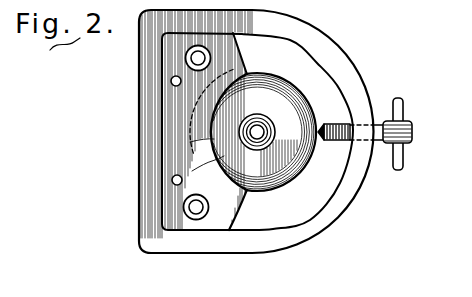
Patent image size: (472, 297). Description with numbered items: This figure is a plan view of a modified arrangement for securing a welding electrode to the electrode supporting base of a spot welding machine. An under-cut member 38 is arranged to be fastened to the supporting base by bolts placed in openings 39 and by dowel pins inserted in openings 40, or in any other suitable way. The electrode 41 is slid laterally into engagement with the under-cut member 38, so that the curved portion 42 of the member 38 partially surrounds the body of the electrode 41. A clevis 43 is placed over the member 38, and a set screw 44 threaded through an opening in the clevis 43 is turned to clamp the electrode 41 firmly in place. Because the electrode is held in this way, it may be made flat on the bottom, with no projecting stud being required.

The under-cut member 38 is at (214, 222).
The openings 39 is at (185, 59).
The openings 40 is at (172, 85).
The electrode 41 is at (307, 90).
The curved portion 42 is at (243, 190).
The clevis 43 is at (320, 212).
The set screw 44 is at (341, 143).